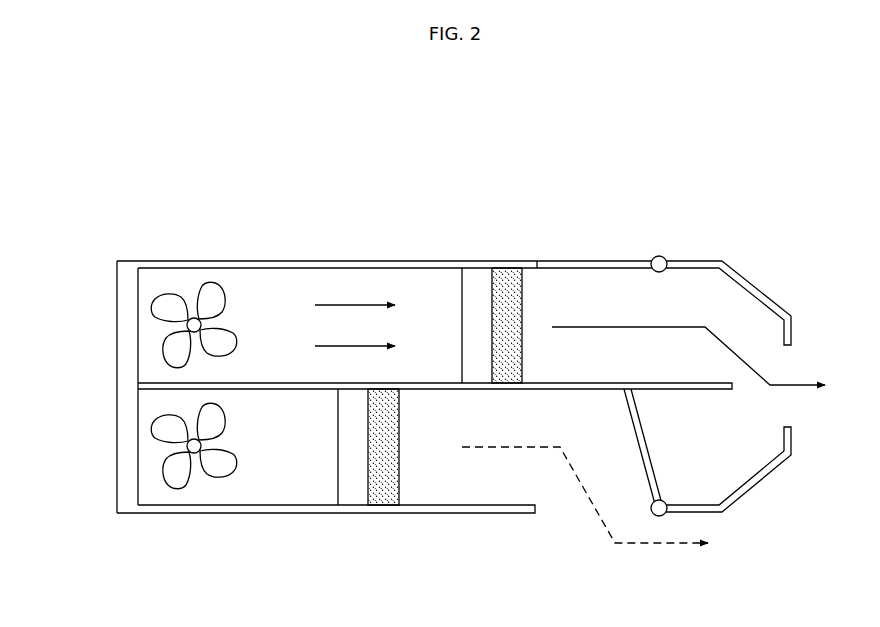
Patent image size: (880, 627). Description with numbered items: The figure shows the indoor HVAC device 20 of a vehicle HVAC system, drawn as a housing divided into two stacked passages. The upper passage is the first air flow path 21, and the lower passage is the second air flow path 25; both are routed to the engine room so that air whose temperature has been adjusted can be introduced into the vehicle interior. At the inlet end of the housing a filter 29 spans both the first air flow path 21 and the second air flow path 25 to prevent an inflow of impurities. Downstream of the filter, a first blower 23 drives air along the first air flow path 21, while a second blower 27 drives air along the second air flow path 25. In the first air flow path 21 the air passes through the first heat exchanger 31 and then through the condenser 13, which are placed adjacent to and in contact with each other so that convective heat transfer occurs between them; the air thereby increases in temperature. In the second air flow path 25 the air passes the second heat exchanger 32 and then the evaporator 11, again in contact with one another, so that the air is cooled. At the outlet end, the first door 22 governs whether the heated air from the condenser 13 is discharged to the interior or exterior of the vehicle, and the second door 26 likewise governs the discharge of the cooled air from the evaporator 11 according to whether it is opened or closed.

The indoor HVAC device 20 is at (362, 246).
The first air flow path 21 is at (276, 290).
The first door 22 is at (612, 263).
The first blower 23 is at (207, 290).
The second air flow path 25 is at (276, 483).
The second door 26 is at (647, 456).
The second blower 27 is at (178, 478).
The filter 29 is at (123, 403).
The first heat exchanger 31 is at (475, 280).
The second heat exchanger 32 is at (350, 492).
The condenser 13 is at (508, 280).
The evaporator 11 is at (383, 492).